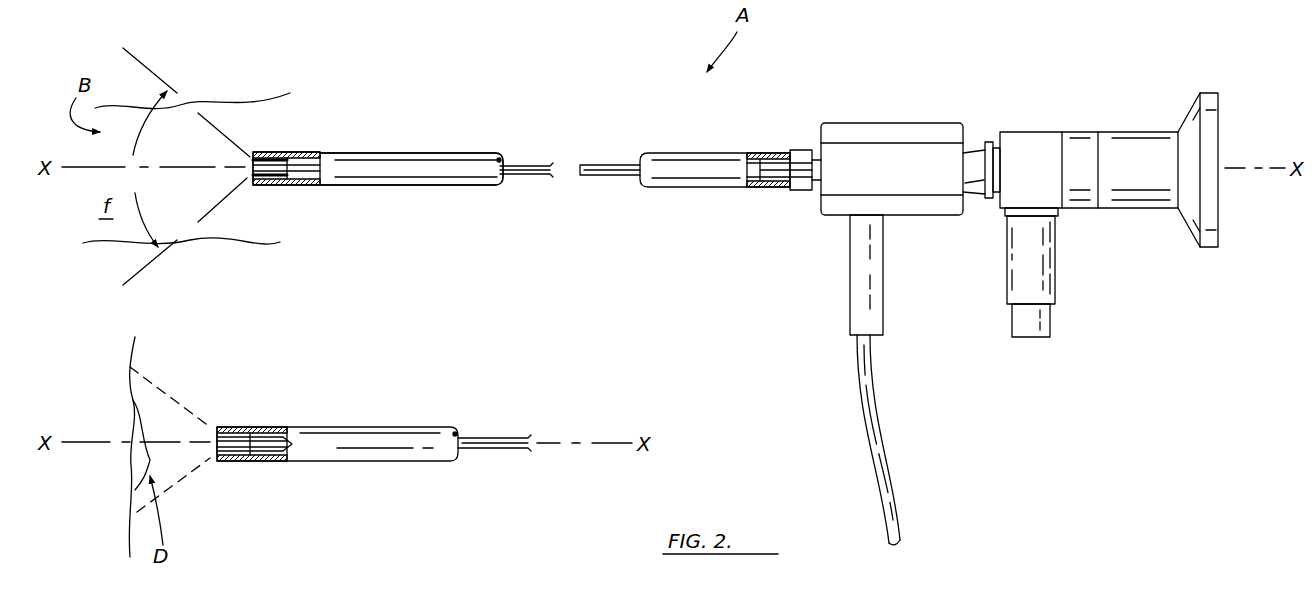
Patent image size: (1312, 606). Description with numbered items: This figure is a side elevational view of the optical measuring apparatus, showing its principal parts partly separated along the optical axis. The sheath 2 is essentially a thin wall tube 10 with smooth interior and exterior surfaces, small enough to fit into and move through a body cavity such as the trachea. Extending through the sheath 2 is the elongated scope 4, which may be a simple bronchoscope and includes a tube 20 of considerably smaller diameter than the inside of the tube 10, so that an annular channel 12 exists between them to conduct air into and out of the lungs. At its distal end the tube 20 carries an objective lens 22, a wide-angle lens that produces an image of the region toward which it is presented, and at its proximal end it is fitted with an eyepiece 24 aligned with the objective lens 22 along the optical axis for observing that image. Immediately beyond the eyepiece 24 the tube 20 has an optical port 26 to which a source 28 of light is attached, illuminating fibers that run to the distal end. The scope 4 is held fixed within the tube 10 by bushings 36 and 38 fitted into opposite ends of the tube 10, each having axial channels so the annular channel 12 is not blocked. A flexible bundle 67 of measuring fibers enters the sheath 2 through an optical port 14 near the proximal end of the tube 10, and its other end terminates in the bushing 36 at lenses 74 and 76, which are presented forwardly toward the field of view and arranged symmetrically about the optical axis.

The sheath 2 is at (403, 190).
The elongated scope 4 is at (528, 177).
The thin wall tube 10 is at (430, 156).
The annular channel 12 is at (507, 158).
The optical port 14 is at (857, 287).
The tube 20 is at (603, 177).
The objective lens 22 is at (250, 170).
The eyepiece 24 is at (1137, 145).
The optical port 26 is at (1043, 208).
The source of light 28 is at (1050, 328).
The bushing 36 is at (290, 155).
The bushing 38 is at (772, 186).
The flexible bundle 67 is at (884, 478).
The lens 74 is at (274, 154).
The lens 76 is at (277, 180).